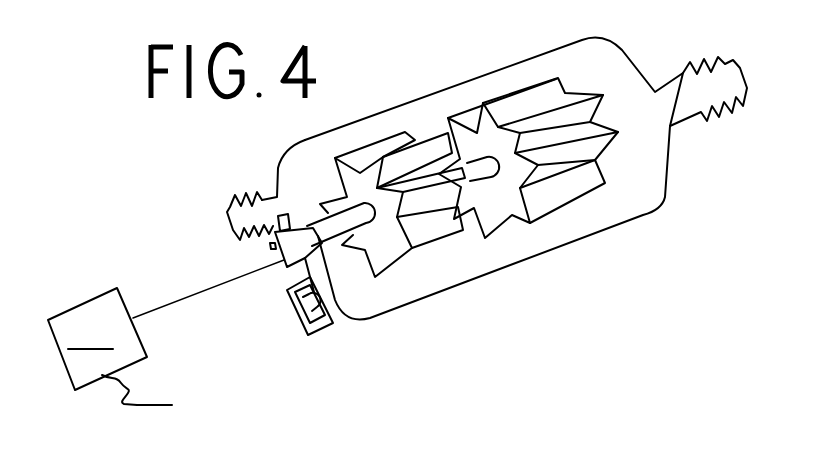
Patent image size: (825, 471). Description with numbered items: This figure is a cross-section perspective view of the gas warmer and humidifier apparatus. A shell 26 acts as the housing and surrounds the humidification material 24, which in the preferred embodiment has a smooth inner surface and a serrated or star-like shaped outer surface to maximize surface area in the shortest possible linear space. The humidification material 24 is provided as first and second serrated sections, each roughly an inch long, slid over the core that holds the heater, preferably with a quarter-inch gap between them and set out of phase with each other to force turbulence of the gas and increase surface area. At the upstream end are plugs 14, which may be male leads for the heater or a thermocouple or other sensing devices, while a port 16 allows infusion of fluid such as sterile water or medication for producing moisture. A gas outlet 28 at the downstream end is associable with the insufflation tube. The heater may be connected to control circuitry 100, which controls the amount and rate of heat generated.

The plugs 14 is at (283, 270).
The port 16 is at (315, 338).
The humidification material 24 is at (427, 246).
The shell 26 is at (665, 198).
The gas outlet 28 is at (727, 85).
The control circuitry 100 is at (166, 350).